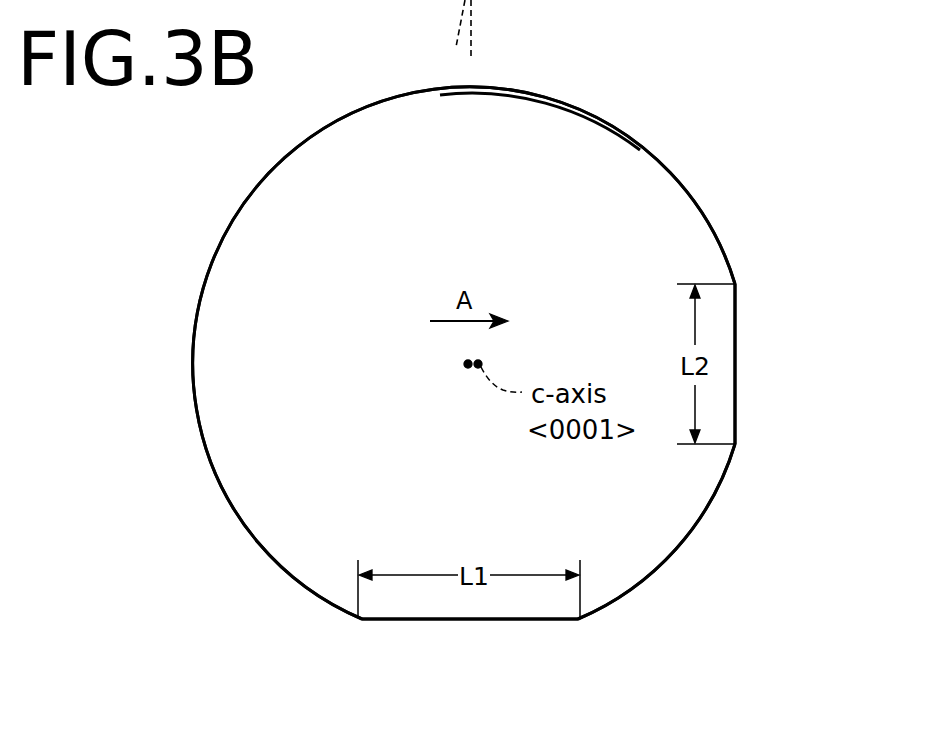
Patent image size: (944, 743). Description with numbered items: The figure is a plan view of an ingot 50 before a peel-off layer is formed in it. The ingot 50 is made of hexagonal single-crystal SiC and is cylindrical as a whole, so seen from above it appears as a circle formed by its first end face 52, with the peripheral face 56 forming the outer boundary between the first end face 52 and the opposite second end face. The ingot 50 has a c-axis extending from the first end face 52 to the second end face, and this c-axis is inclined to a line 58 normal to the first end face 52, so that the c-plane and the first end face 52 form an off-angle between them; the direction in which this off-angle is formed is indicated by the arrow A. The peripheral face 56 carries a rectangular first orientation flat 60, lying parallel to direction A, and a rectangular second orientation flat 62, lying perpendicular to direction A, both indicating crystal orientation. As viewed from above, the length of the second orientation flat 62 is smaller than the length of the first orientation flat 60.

The ingot 50 is at (236, 211).
The first end face 52 is at (560, 143).
The peripheral face 56 is at (678, 176).
The line normal to the first end face 58 is at (464, 365).
The first orientation flat 60 is at (515, 621).
The second orientation flat 62 is at (738, 363).